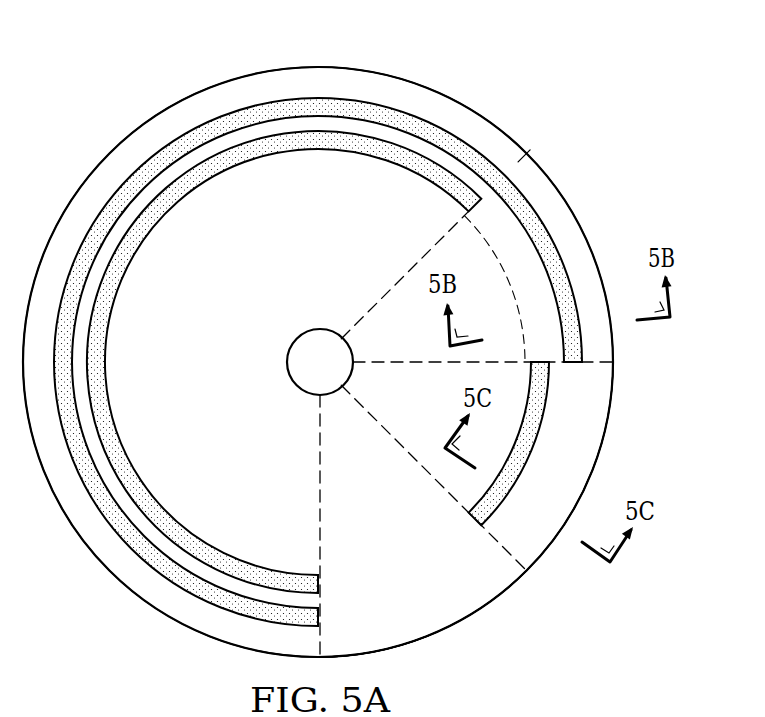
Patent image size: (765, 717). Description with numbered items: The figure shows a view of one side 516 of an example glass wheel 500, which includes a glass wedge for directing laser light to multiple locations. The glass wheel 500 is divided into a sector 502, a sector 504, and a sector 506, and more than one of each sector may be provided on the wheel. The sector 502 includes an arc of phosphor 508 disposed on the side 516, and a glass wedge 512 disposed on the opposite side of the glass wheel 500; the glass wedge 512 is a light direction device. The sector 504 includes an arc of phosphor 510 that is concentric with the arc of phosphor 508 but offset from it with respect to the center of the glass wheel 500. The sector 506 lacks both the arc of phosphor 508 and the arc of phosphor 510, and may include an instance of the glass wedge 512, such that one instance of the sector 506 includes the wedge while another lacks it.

The glass wheel 500 is at (243, 72).
The sector 502 is at (650, 227).
The sector 504 is at (627, 451).
The sector 506 is at (452, 636).
The arc of phosphor 508 is at (525, 205).
The arc of phosphor 510 is at (537, 410).
The glass wedge 512 is at (533, 255).
The side 516 is at (412, 102).